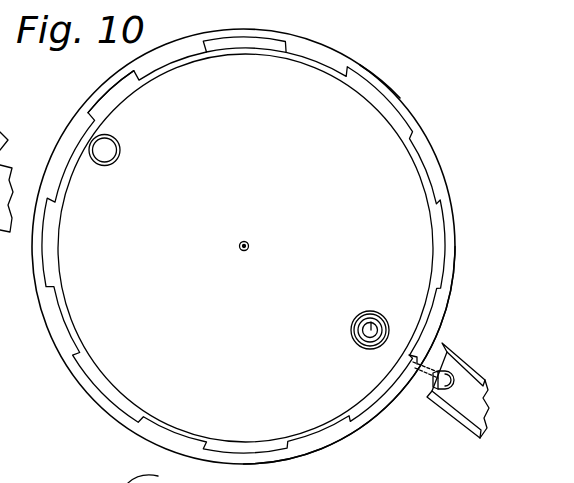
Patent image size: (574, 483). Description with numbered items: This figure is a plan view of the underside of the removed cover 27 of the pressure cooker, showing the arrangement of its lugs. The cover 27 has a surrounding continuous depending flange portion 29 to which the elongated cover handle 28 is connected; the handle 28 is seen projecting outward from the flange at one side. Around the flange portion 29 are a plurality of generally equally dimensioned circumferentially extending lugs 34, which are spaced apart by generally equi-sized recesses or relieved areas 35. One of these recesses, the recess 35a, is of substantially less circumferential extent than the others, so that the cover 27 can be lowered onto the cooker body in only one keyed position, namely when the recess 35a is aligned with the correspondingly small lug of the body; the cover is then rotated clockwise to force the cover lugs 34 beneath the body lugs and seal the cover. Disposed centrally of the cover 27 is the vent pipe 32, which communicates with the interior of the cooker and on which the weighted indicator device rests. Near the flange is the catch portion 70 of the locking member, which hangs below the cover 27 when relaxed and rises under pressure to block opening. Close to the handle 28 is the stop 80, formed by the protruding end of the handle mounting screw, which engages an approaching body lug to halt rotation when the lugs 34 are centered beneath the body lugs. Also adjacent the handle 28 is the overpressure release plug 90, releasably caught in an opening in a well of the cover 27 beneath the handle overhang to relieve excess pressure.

The cover 27 is at (268, 197).
The cover handle 28 is at (458, 420).
The flange portion 29 is at (391, 58).
The vent pipe 32 is at (249, 249).
The cover lugs 34 is at (288, 53).
The recesses 35 is at (253, 46).
The keying recess 35a is at (121, 95).
The catch portion 70 is at (120, 150).
The stop 80 is at (413, 359).
The overpressure release plug 90 is at (393, 296).